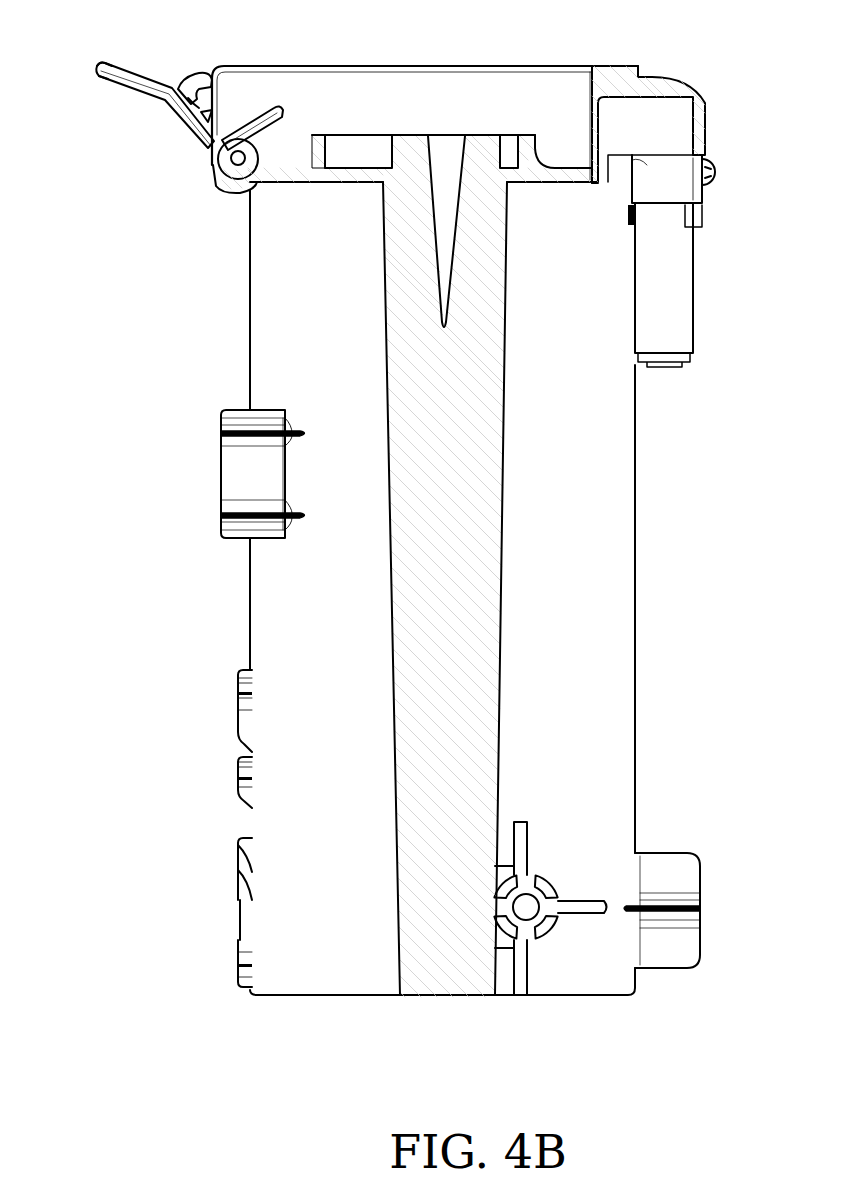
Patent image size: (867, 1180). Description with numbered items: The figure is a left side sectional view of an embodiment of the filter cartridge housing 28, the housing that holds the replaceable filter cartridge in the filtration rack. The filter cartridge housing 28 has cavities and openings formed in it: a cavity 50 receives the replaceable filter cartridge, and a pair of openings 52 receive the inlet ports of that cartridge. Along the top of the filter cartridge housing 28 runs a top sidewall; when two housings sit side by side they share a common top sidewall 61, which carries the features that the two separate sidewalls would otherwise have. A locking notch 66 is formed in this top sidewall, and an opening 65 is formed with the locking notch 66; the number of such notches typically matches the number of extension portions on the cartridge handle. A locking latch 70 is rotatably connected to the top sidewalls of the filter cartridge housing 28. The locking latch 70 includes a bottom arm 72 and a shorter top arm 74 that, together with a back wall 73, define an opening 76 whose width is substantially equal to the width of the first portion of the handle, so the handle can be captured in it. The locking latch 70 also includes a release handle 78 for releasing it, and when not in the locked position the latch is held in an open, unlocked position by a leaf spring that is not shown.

The filter cartridge housing 28 is at (230, 354).
The cavity 50 is at (463, 116).
The openings 52 is at (683, 342).
The common top sidewall 61 is at (312, 64).
The opening 65 is at (538, 160).
The locking notch 66 is at (683, 117).
The locking latch 70 is at (117, 63).
The bottom arm 72 is at (267, 131).
The back wall 73 is at (207, 117).
The top arm 74 is at (187, 80).
The opening 76 is at (188, 99).
The release handle 78 is at (105, 83).